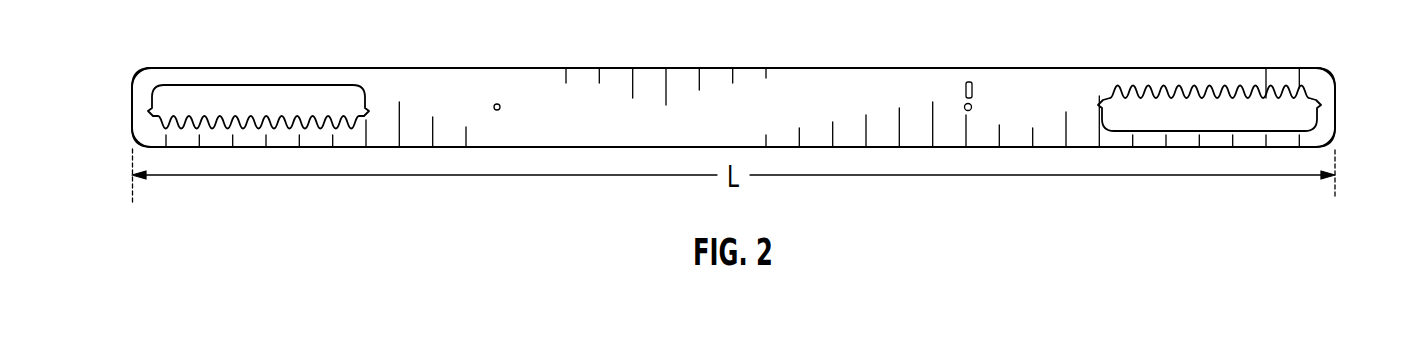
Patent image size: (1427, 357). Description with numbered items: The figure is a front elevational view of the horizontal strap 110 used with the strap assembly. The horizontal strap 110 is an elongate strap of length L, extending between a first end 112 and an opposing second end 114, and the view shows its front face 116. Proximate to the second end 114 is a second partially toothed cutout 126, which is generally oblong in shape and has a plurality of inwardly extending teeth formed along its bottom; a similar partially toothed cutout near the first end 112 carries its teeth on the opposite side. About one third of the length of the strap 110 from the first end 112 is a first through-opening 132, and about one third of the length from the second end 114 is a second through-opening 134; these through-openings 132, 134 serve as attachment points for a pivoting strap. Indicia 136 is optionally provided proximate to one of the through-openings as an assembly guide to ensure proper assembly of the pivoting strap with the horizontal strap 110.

The horizontal strap 110 is at (715, 67).
The first end 112 is at (1336, 112).
The second end 114 is at (132, 105).
The front face 116 is at (580, 80).
The second partially toothed cutout 126 is at (251, 95).
The first through-opening 132 is at (973, 106).
The second through-opening 134 is at (498, 104).
The indicia 136 is at (967, 82).